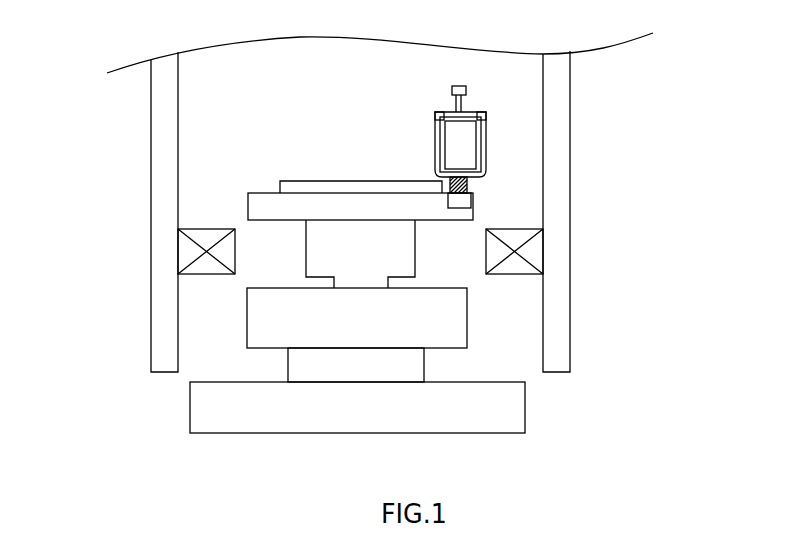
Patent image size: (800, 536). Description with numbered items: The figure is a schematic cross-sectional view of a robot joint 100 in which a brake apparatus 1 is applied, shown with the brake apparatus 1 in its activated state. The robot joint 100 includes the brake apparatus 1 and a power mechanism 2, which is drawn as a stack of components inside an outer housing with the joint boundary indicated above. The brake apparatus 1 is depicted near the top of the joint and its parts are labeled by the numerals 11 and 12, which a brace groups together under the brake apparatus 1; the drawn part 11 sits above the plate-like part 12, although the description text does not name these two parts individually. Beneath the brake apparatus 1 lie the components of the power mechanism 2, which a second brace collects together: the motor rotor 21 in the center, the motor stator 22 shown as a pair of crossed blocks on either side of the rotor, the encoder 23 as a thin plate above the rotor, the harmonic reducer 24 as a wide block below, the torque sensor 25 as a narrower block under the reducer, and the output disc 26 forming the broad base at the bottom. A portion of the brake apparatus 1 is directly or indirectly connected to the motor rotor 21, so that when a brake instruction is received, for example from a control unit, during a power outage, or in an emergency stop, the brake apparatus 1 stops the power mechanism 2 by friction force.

The robot joint 100 is at (42, 88).
The brake apparatus 1 is at (655, 105).
The suction nozzle / gripper 11 is at (462, 140).
The mounting plate 12 is at (462, 217).
The power mechanism 2 is at (750, 302).
The motor rotor 21 is at (323, 263).
The motor stator 22 is at (532, 248).
The encoder 23 is at (333, 185).
The harmonic reducer 24 is at (315, 322).
The torque sensor 25 is at (315, 372).
The output disc 26 is at (212, 410).